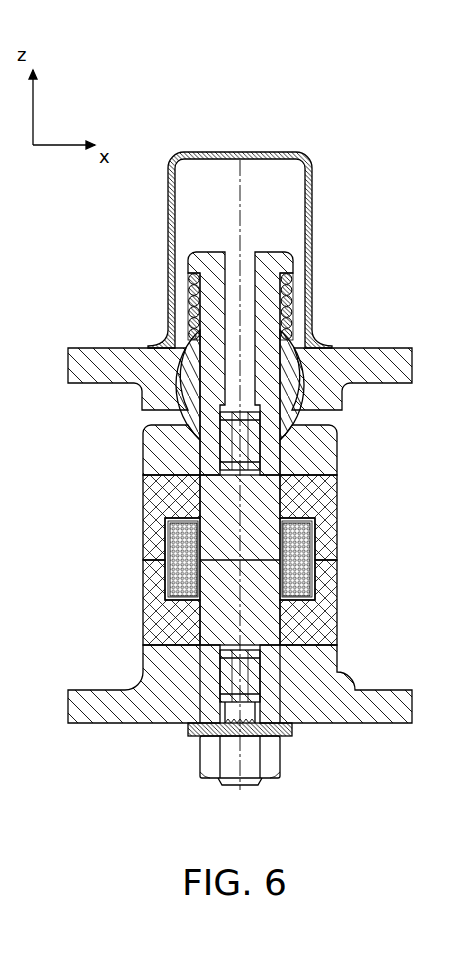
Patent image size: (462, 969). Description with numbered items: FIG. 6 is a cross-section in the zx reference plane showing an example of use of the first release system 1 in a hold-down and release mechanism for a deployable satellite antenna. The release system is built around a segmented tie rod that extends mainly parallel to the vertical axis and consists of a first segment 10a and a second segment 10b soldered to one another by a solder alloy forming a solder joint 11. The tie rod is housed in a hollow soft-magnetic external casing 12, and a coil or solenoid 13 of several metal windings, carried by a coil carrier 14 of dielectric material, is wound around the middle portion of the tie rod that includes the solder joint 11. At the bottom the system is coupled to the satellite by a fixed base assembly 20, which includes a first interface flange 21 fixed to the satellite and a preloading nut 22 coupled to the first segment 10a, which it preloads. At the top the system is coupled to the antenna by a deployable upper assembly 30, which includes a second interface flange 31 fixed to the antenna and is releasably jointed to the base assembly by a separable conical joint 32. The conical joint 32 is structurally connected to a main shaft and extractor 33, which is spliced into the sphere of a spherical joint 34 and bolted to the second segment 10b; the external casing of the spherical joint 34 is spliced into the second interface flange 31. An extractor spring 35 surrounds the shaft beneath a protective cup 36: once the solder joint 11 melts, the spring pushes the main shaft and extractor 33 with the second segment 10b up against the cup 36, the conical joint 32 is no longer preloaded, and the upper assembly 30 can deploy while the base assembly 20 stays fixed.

The first release system 1 is at (263, 602).
The first segment 10a is at (337, 618).
The second segment 10b is at (177, 493).
The solder joint 11 is at (188, 580).
The external casing 12 is at (150, 567).
The coil or solenoid 13 is at (337, 541).
The coil carrier 14 is at (330, 517).
The fixed base assembly 20 is at (181, 757).
The first interface flange 21 is at (403, 688).
The preloading nut 22 is at (272, 758).
The deployable upper assembly 30 is at (261, 288).
The second interface flange 31 is at (396, 348).
The separable conical joint 32 is at (186, 437).
The main shaft and extractor 33 is at (270, 257).
The spherical joint 34 is at (170, 339).
The extractor spring 35 is at (295, 294).
The protective cup 36 is at (168, 236).